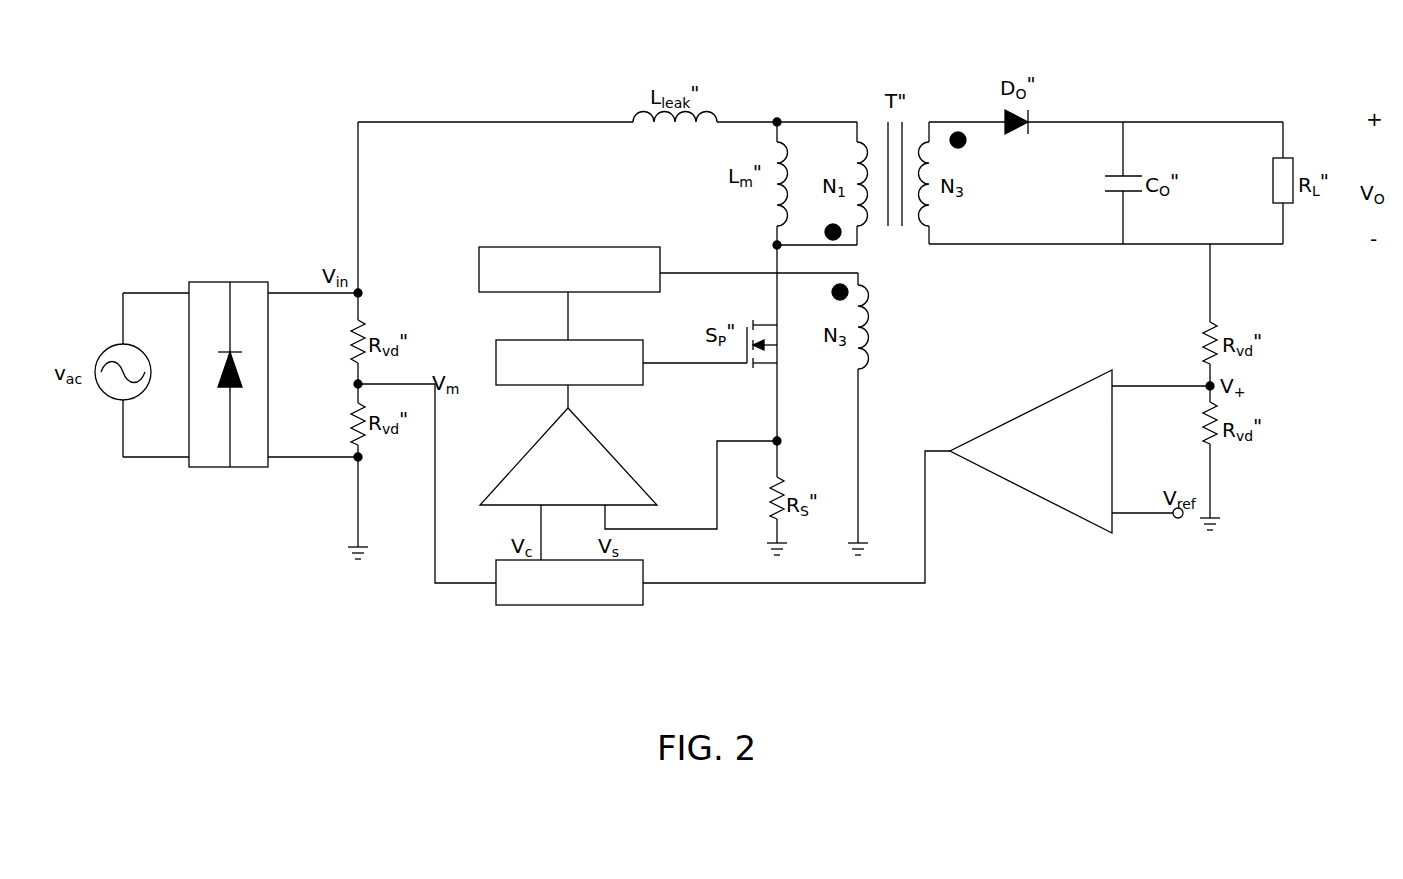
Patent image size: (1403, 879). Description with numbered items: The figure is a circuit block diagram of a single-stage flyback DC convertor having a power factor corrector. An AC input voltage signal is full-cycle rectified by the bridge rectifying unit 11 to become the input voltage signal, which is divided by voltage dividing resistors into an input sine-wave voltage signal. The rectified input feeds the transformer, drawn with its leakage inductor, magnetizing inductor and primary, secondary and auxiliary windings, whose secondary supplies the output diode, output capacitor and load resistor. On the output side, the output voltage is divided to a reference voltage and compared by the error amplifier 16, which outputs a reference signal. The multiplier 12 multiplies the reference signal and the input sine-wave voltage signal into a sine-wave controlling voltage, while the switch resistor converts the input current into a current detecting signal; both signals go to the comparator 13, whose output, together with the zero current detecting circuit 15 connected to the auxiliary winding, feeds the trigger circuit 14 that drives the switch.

The bridge rectifying unit 11 is at (203, 458).
The multiplier 12 is at (569, 582).
The comparator 13 is at (628, 484).
The trigger circuit 14 is at (621, 374).
The zero current detecting circuit 15 is at (668, 293).
The error amplifier 16 is at (926, 476).